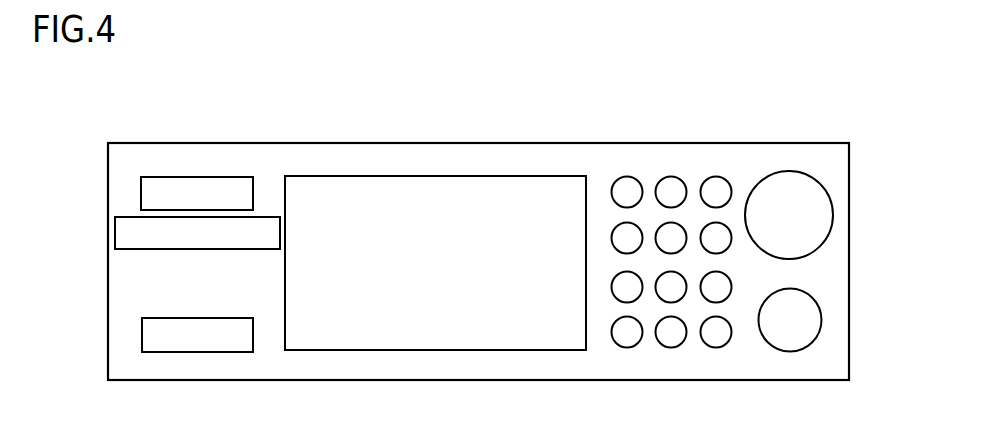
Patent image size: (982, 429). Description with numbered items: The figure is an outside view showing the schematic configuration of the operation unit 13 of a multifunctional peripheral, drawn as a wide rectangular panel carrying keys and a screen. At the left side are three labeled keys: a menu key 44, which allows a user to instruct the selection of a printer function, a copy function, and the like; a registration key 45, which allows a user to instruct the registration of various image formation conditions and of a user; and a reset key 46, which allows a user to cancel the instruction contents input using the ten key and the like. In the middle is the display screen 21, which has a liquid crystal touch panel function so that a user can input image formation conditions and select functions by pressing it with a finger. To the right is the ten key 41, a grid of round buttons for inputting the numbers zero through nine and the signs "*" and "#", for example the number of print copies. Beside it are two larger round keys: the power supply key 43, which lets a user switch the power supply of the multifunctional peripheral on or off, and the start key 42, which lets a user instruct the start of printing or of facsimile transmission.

The operation unit 13 is at (800, 142).
The display screen 21 is at (543, 176).
The ten key 41 is at (680, 161).
The start key 42 is at (821, 320).
The power supply key 43 is at (831, 198).
The menu key 44 is at (141, 193).
The registration key 45 is at (115, 238).
The reset key 46 is at (142, 340).